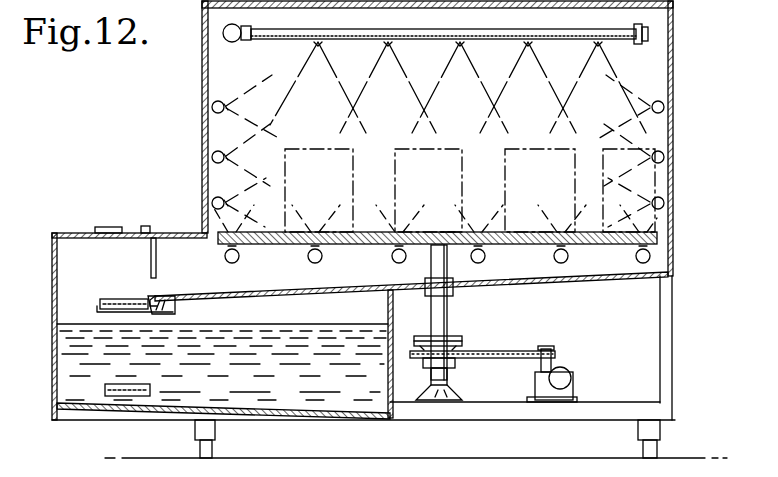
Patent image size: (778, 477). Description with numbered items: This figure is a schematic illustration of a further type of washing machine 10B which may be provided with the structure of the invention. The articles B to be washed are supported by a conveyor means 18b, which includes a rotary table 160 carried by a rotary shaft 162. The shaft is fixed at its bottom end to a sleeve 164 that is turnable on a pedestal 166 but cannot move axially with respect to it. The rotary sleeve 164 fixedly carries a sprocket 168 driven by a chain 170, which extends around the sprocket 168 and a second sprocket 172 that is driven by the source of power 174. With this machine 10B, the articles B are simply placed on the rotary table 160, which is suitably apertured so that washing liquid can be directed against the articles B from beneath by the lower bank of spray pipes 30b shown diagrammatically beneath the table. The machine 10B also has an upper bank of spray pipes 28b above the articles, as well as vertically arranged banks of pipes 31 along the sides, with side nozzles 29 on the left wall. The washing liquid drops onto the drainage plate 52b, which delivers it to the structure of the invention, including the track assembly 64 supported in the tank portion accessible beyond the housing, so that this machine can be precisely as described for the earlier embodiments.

The machine 10B is at (194, 111).
The upper bank of spray pipes 28b is at (270, 42).
The left side spray nozzles 29 is at (218, 96).
The vertically arranged banks of pipes 31 is at (660, 100).
The articles B is at (436, 185).
The conveyor means 18b is at (298, 257).
The lower bank of spray pipes 30b is at (228, 262).
The rotary table 160 is at (503, 249).
The drainage plate 52b is at (340, 288).
The track assembly 64 is at (138, 291).
The rotary shaft 162 is at (448, 313).
The sleeve 164 is at (464, 344).
The chain 170 is at (530, 350).
The second sprocket 172 is at (556, 352).
The sprocket 168 is at (458, 360).
The pedestal 166 is at (434, 400).
The source of power 174 is at (542, 386).